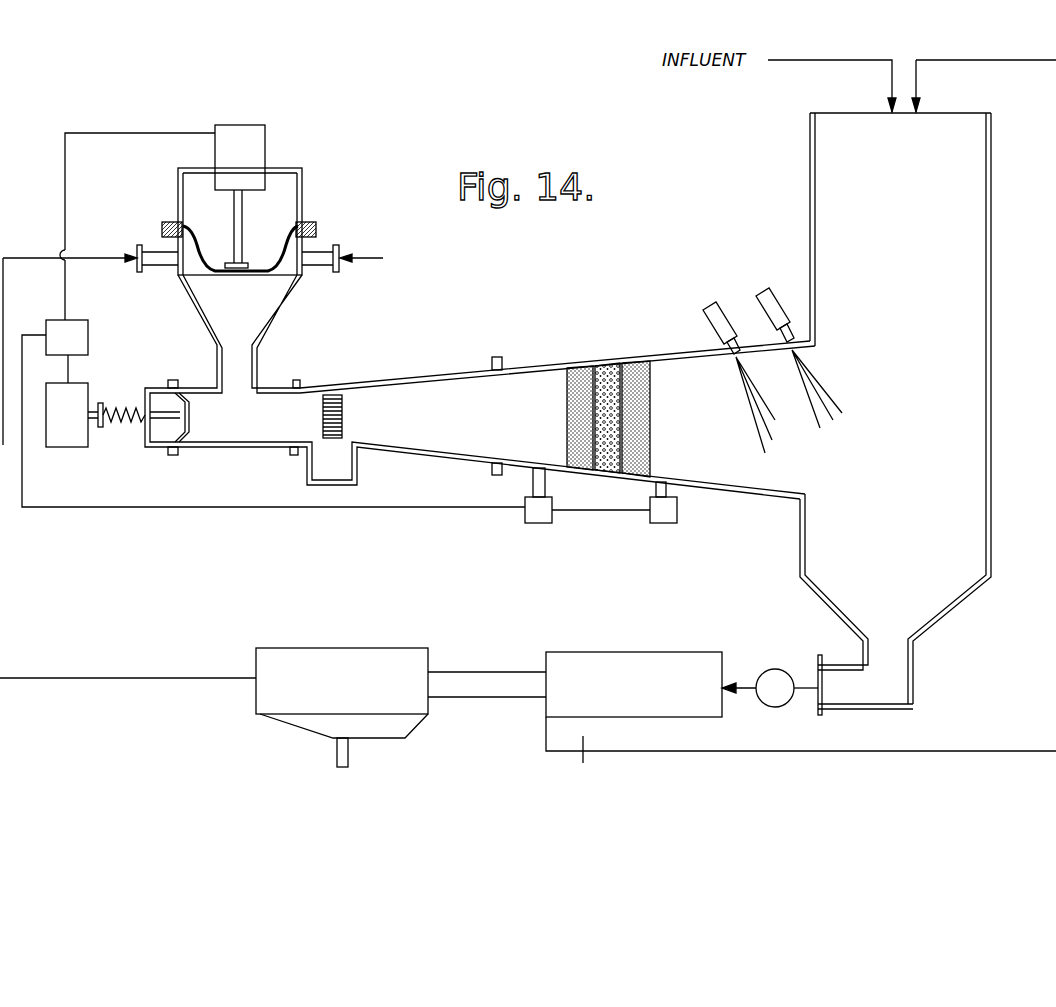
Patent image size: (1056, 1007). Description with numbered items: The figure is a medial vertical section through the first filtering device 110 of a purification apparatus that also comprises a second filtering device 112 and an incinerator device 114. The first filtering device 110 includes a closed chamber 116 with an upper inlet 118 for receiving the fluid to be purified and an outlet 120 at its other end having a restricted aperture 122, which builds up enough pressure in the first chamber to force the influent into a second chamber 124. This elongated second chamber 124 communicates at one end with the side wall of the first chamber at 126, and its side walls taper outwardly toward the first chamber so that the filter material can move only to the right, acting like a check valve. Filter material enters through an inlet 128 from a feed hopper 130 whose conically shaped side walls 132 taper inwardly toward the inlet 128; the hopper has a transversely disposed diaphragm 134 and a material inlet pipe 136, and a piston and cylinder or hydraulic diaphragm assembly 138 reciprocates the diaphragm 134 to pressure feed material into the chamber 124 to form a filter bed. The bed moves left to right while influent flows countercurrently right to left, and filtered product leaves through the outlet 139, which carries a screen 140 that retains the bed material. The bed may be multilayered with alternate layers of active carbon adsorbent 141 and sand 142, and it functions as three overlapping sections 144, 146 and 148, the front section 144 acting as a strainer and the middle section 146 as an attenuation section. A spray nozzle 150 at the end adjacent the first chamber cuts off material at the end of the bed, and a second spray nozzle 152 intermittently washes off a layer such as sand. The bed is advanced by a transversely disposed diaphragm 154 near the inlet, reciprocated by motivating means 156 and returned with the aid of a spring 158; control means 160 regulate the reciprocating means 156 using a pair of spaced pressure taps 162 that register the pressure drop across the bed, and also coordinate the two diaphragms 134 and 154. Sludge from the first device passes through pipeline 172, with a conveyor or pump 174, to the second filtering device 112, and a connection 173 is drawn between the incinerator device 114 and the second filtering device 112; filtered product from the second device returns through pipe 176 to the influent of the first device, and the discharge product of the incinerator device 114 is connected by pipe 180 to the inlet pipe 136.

The first filtering device 110 is at (557, 310).
The second filtering device 112 is at (674, 620).
The incinerator device 114 is at (388, 598).
The closed chamber 116 is at (965, 318).
The upper inlet 118 is at (903, 116).
The outlet 120 is at (818, 660).
The restricted aperture 122 is at (897, 658).
The second chamber 124 is at (460, 430).
The communication with side wall of first chamber 126 is at (798, 508).
The inlet 128 is at (242, 382).
The feed hopper 130 is at (270, 300).
The conically shaped side walls 132 is at (194, 305).
The diaphragm 134 is at (273, 243).
The material inlet pipe 136 is at (150, 248).
The piston and cylinder or hydraulic diaphragm assembly 138 is at (253, 143).
The outlet 139 is at (312, 457).
The screen 140 is at (345, 393).
The active carbon adsorbent 141 is at (582, 370).
The sand 142 is at (606, 368).
The first or front section 144 is at (722, 470).
The second or middle section 146 is at (518, 450).
The third section 148 is at (413, 433).
The spray nozzle 150 is at (774, 290).
The second spray nozzle 152 is at (735, 314).
The diaphragm 154 is at (190, 433).
The motivating means 156 is at (66, 440).
The spring 158 is at (123, 422).
The control means 160 is at (77, 343).
The pressure taps 162 is at (657, 522).
The pipeline 172 is at (745, 682).
The conduit 173 is at (465, 700).
The conveyor or pump 174 is at (777, 700).
The pipe 176 is at (910, 753).
The pipe 180 is at (118, 678).